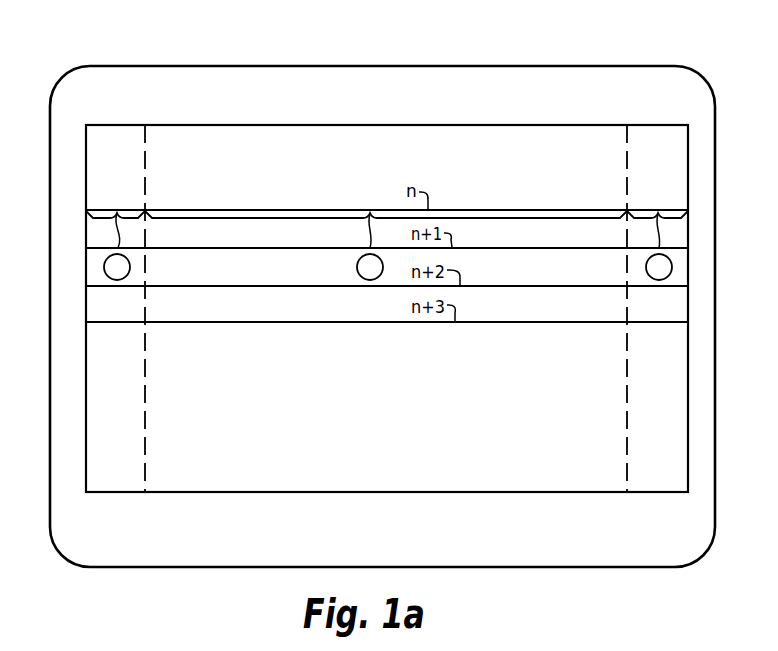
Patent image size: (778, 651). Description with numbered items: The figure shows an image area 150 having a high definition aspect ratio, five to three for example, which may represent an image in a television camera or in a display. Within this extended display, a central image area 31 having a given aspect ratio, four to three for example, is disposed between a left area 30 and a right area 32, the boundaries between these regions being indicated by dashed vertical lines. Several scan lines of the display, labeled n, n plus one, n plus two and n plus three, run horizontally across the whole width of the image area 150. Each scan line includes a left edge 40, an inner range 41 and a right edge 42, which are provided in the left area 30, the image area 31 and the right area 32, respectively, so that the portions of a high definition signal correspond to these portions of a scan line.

The left area 30 is at (116, 132).
The image area 31 is at (355, 132).
The right area 32 is at (650, 133).
The left edge 40 is at (117, 210).
The inner range 41 is at (323, 210).
The right edge 42 is at (657, 210).
The image area 150 is at (386, 425).